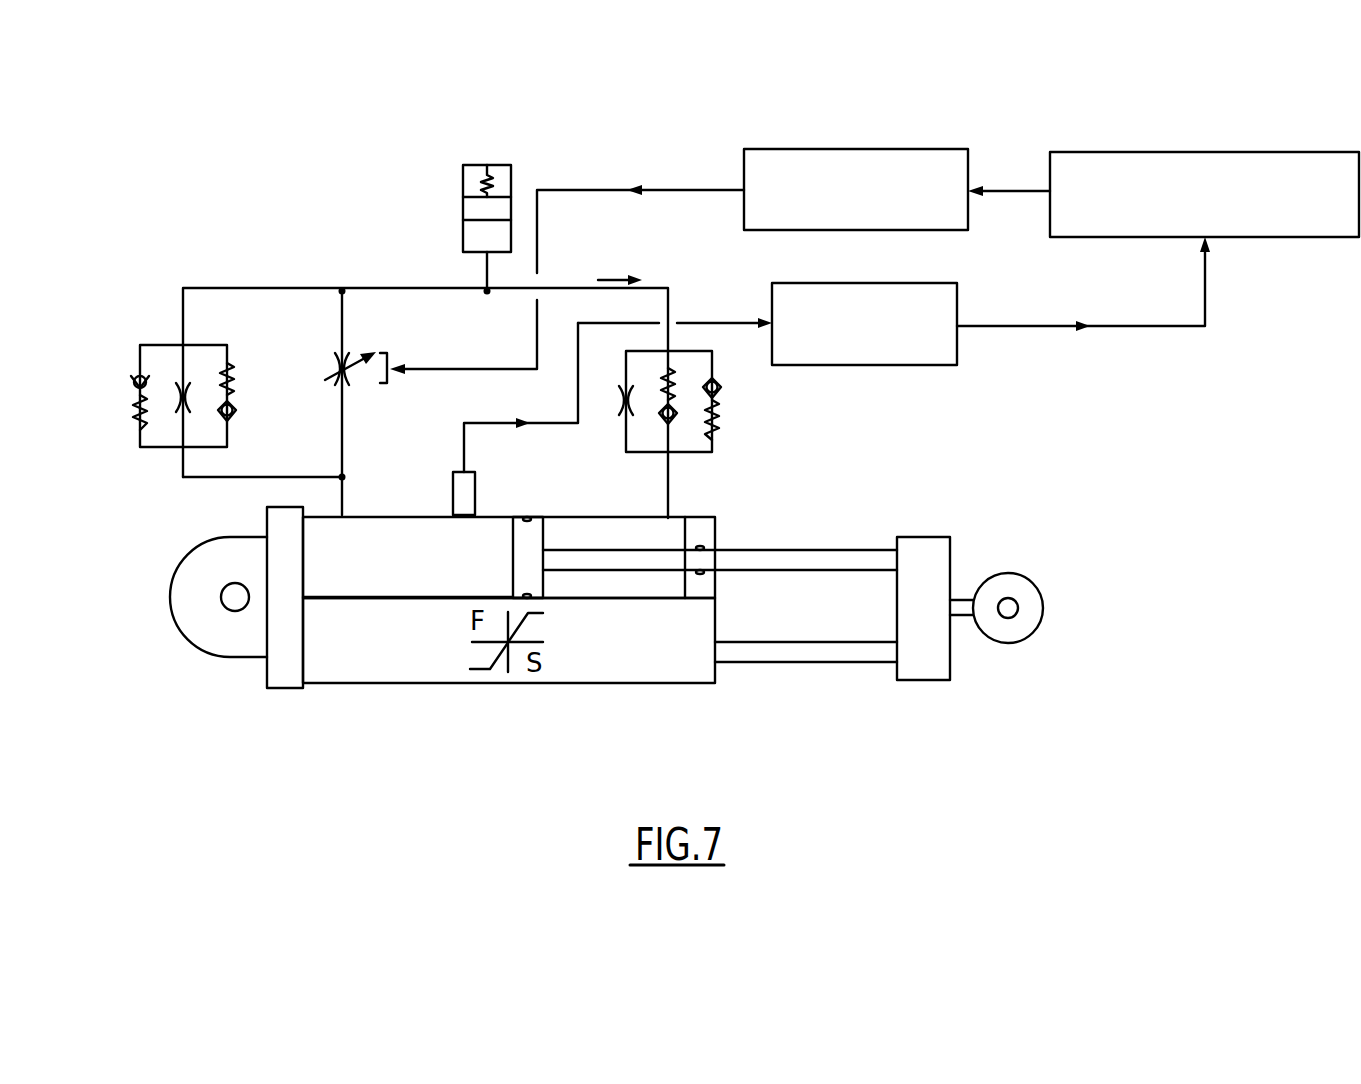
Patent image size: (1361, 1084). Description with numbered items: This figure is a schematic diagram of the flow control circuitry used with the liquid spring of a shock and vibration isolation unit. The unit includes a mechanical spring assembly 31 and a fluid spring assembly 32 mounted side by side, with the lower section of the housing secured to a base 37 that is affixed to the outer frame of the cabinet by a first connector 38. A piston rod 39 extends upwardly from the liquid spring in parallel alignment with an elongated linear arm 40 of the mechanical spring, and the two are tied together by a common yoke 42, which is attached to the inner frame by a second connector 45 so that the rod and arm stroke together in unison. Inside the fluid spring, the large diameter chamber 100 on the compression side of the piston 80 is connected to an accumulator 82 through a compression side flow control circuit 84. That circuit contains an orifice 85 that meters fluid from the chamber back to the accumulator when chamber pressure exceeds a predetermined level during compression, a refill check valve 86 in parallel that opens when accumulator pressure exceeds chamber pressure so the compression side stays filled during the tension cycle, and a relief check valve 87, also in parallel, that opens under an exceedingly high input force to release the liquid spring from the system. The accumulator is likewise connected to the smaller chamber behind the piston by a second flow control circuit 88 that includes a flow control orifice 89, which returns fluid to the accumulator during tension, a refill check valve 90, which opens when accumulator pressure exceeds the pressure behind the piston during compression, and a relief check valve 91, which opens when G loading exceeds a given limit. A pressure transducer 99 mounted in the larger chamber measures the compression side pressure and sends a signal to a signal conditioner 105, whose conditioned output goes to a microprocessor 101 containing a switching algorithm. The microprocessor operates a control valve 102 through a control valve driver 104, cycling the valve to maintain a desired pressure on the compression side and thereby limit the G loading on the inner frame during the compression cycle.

The mechanical spring assembly 31 is at (655, 702).
The fluid spring assembly 32 is at (436, 618).
The base 37 is at (280, 684).
The first connector 38 is at (194, 672).
The piston rod 39 is at (820, 556).
The linear arm 40 is at (860, 664).
The yoke 42 is at (942, 560).
The second connector 45 is at (1028, 655).
The piston 80 is at (532, 537).
The accumulator 82 is at (513, 177).
The compression side flow control circuit 84 is at (118, 420).
The orifice 85 is at (182, 403).
The refill check valve 86 is at (135, 398).
The relief check valve 87 is at (232, 387).
The second flow control circuit 88 is at (752, 406).
The flow control orifice 89 is at (616, 408).
The refill check valve 90 is at (674, 398).
The relief check valve 91 is at (716, 420).
The pressure transducer 99 is at (452, 497).
The large diameter chamber 100 is at (380, 572).
The microprocessor 101 is at (1246, 152).
The control valve 102 is at (385, 353).
The control valve driver 104 is at (878, 149).
The signal conditioner 105 is at (958, 300).